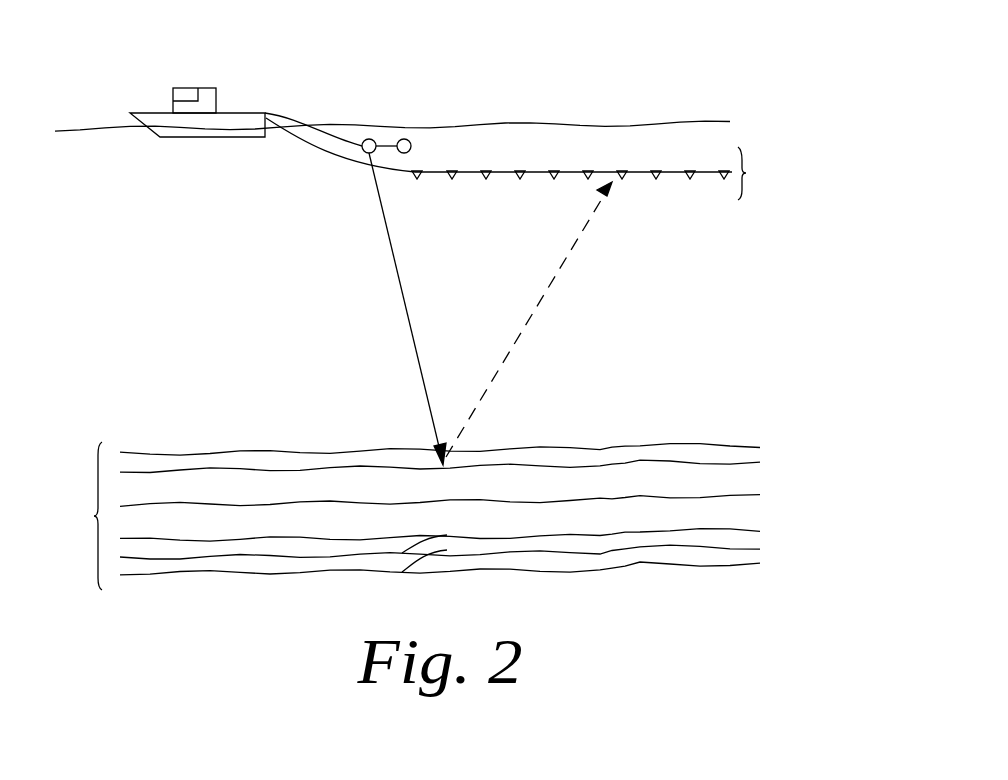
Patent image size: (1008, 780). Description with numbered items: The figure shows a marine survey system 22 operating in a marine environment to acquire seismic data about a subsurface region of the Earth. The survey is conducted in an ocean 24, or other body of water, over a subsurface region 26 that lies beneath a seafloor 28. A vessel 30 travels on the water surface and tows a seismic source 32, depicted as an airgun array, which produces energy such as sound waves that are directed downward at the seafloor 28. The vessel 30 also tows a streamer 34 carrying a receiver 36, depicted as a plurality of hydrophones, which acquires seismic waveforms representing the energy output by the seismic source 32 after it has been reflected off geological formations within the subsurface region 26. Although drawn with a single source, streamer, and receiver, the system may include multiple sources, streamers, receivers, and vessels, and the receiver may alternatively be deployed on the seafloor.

The marine survey system 22 is at (650, 57).
The ocean 24 is at (281, 308).
The subsurface region 26 is at (412, 516).
The seafloor 28 is at (210, 448).
The vessel 30 is at (203, 88).
The seismic source 32 is at (369, 139).
The streamer 34 is at (519, 159).
The receiver 36 is at (457, 181).